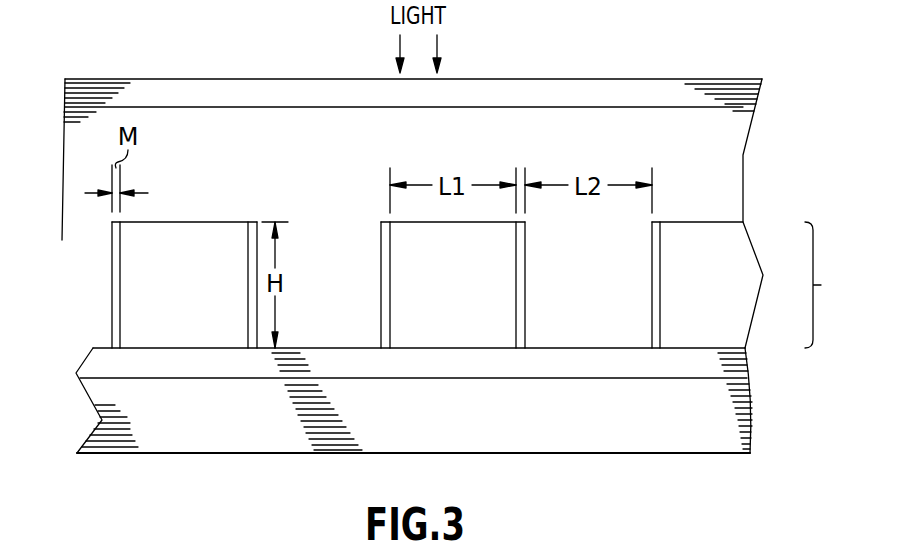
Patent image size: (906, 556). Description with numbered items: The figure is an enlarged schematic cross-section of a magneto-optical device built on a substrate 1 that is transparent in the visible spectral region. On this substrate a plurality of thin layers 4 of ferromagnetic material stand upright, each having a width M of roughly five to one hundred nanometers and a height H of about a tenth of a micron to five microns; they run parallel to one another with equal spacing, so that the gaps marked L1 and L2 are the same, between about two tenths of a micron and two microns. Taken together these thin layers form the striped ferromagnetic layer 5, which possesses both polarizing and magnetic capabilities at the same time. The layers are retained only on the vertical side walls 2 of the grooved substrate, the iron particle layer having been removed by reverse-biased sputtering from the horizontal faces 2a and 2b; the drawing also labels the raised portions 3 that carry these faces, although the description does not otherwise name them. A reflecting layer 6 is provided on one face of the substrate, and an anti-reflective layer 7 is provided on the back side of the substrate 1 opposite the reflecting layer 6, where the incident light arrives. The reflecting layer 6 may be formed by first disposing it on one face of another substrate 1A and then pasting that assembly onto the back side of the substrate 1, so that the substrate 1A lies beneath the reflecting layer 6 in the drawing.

The substrate 1 is at (735, 131).
The another substrate 1A is at (658, 440).
The side walls 2 is at (380, 258).
The horizontal face 2a is at (300, 348).
The horizontal face 2b is at (183, 222).
The protrusion 3 is at (143, 258).
The thin layers of ferromagnetic material 4 is at (387, 297).
The plurality of thin layers of ferromagnetic material 5 is at (824, 285).
The reflecting layer 6 is at (95, 366).
The anti-reflective layer 7 is at (530, 86).